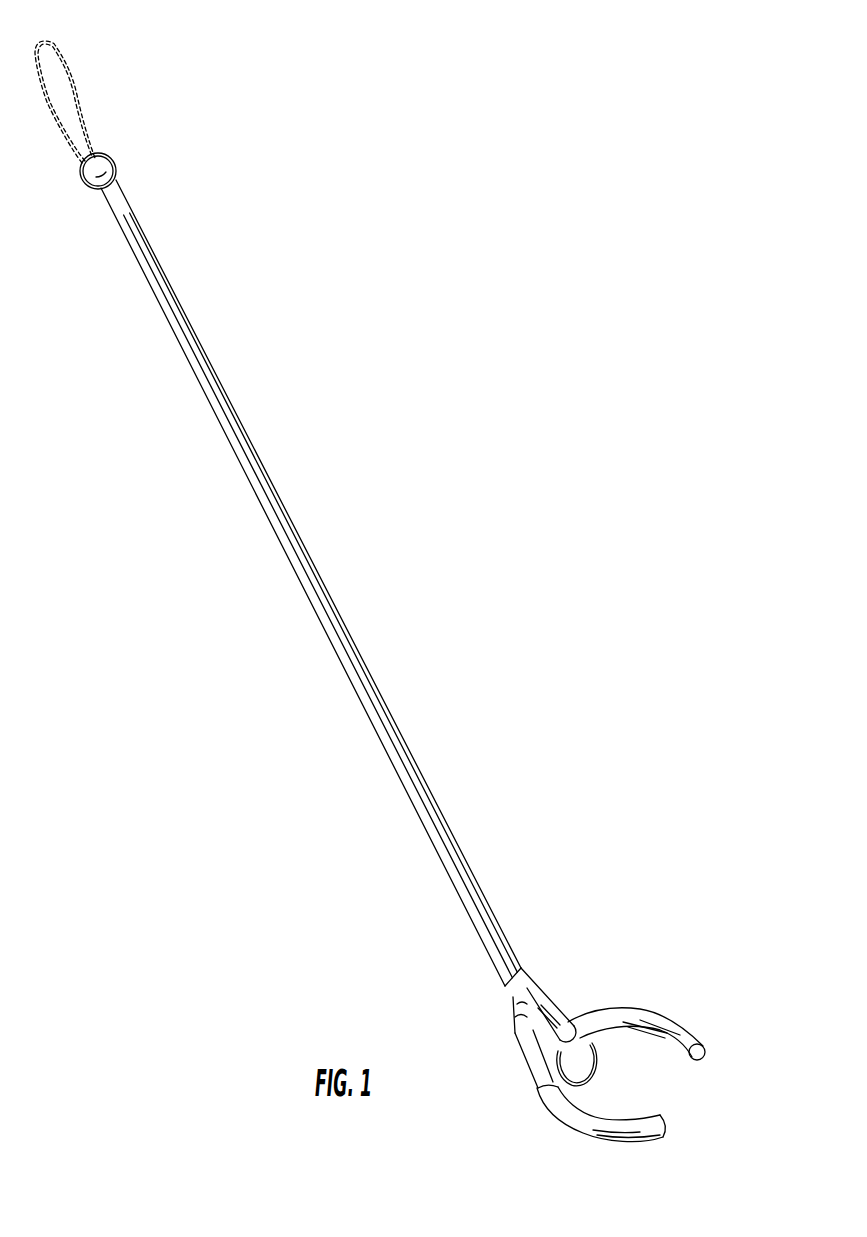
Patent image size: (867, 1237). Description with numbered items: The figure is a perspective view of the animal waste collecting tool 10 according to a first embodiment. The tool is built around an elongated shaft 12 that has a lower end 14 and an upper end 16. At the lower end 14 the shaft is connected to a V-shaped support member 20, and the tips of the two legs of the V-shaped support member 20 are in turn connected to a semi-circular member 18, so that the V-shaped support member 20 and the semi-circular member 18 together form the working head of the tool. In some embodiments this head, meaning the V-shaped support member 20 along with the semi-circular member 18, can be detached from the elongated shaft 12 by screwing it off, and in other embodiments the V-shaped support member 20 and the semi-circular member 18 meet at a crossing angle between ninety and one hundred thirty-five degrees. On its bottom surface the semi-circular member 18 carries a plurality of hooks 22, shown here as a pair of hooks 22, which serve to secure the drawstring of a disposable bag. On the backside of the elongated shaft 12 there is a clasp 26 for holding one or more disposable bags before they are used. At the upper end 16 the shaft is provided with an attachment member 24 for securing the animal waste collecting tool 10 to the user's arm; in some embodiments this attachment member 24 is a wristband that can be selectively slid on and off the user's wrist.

The animal waste collecting tool 10 is at (456, 325).
The elongated shaft 12 is at (331, 573).
The lower end 14 is at (513, 983).
The upper end 16 is at (120, 167).
The semi-circular member 18 is at (652, 1010).
The V-shaped support member 20 is at (522, 1033).
The hooks 22 is at (593, 1043).
The attachment member 24 is at (75, 66).
The clasp 26 is at (238, 473).